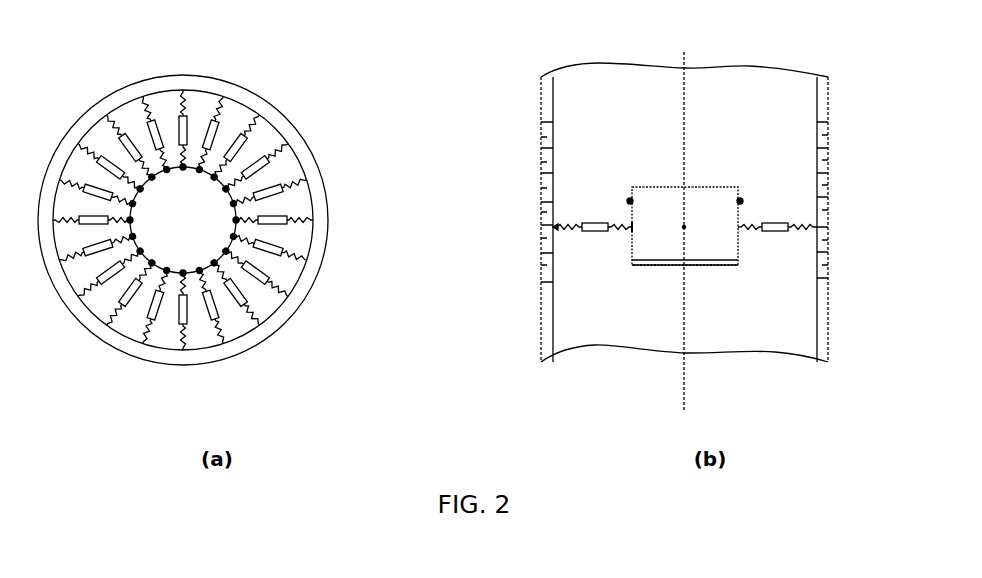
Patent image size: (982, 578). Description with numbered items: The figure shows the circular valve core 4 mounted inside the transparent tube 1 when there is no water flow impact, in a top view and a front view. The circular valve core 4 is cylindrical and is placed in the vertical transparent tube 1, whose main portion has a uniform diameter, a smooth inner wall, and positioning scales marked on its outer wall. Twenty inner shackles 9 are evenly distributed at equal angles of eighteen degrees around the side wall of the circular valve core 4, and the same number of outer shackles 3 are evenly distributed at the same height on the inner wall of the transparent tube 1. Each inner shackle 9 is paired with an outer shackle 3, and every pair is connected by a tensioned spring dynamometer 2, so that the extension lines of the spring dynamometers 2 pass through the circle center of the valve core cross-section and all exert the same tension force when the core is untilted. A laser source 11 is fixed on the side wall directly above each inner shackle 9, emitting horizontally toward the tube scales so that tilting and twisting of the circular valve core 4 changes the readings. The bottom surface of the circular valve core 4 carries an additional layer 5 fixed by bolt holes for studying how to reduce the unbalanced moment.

The transparent tube 1 is at (253, 102).
The spring dynamometer 2 is at (263, 245).
The outer shackle 3 is at (313, 221).
The circular valve core 4 is at (185, 180).
The additional layer of bottom surface of valve core 5 is at (673, 263).
The inner shackle 9 is at (632, 227).
The laser source 11 is at (222, 184).